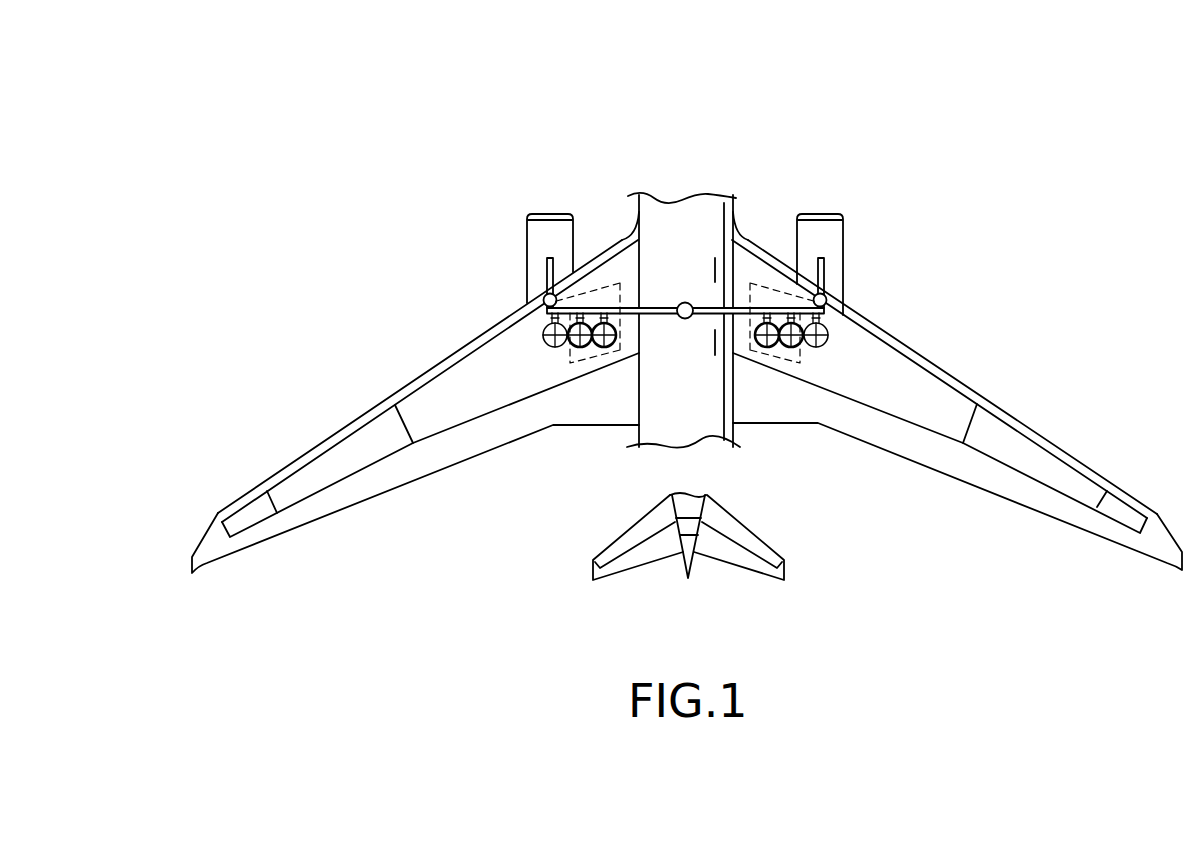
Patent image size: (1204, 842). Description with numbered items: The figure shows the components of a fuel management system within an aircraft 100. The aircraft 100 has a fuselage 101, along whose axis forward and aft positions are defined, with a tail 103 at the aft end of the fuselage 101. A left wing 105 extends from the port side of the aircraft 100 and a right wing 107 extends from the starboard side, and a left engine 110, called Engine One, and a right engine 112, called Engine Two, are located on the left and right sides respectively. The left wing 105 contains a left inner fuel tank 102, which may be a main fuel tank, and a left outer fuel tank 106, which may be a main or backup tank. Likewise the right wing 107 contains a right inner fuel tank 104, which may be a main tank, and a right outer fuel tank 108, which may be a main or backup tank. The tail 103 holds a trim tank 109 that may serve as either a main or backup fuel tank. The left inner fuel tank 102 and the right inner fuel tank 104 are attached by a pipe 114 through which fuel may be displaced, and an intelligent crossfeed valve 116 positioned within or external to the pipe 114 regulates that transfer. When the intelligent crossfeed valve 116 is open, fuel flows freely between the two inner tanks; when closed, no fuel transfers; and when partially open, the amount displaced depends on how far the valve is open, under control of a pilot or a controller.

The aircraft 100 is at (305, 168).
The fuselage 101 is at (657, 215).
The left inner fuel tank 102 is at (458, 375).
The tail 103 is at (696, 595).
The right inner fuel tank 104 is at (925, 380).
The left wing 105 is at (374, 338).
The left outer fuel tank 106 is at (343, 453).
The right wing 107 is at (1062, 338).
The right outer fuel tank 108 is at (1075, 477).
The trim tank 109 is at (618, 560).
The left engine 110 is at (525, 226).
The right engine 112 is at (846, 237).
The pipe 114 is at (663, 315).
The intelligent crossfeed valve 116 is at (688, 317).